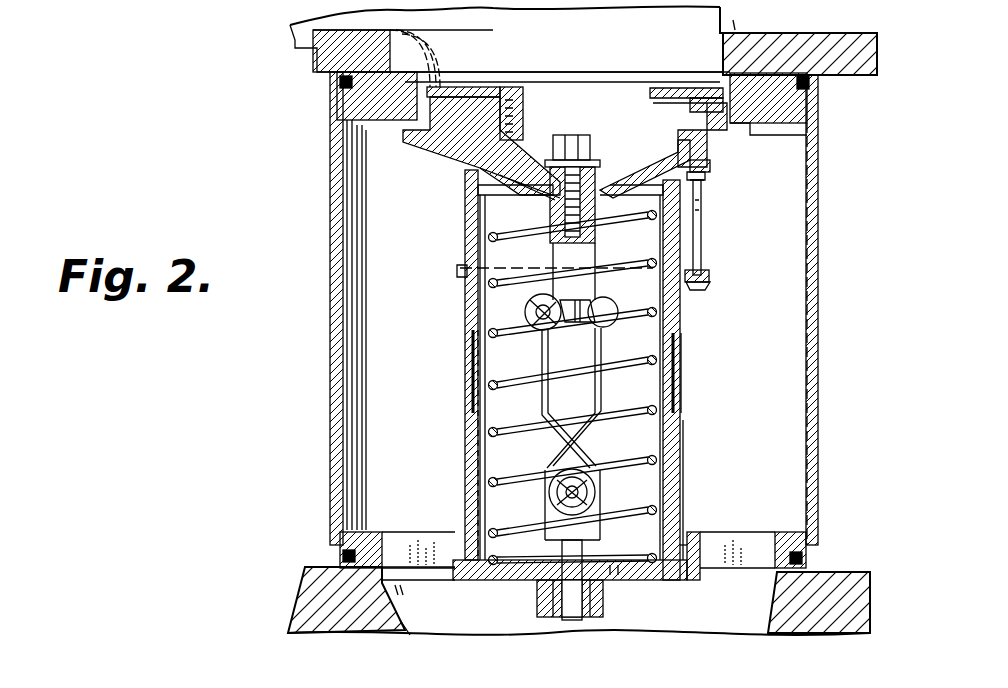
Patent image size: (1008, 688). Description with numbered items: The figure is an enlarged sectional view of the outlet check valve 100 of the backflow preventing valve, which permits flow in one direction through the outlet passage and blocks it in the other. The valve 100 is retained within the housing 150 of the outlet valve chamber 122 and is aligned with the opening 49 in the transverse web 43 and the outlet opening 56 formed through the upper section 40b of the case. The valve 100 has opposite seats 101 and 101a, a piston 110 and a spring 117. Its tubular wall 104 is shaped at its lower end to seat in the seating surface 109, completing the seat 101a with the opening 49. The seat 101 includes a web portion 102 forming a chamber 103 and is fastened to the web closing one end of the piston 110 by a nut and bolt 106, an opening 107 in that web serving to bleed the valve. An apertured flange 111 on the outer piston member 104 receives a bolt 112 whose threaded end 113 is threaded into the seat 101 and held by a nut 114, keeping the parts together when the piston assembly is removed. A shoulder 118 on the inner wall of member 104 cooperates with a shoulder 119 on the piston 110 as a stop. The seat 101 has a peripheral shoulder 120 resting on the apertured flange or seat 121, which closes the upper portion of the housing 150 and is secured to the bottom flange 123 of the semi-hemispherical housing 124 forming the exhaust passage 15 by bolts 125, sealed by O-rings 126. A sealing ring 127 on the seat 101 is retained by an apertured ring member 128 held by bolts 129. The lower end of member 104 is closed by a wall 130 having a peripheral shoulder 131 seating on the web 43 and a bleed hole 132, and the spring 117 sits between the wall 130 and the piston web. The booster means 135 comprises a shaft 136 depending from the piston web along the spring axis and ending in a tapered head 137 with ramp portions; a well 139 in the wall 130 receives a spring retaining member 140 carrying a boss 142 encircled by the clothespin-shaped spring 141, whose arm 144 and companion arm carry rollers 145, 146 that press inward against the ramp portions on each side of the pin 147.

The exhaust passage 15 is at (583, 44).
The semi-hemispherical shaped wall or housing 124 is at (735, 22).
The bottom flange 123 is at (855, 60).
The apertured ring member 128 is at (470, 88).
The bolts 129 is at (512, 98).
The O-rings 126 is at (333, 80).
The seat 101 is at (705, 105).
The apertured flange or seat 121 is at (810, 103).
The peripheral shoulder 120 is at (807, 148).
The bolts 125 is at (345, 132).
The outlet valve chamber 122 is at (355, 333).
The housing 150 is at (320, 228).
The web portion 102 is at (660, 148).
The sealing ring 127 is at (452, 120).
The chamber 103 is at (500, 113).
The threaded end 113 is at (705, 150).
The nut 114 is at (700, 175).
The bolt 112 is at (697, 235).
The apertured flange 111 is at (712, 278).
The nut and bolt 106 is at (553, 148).
The opening 107 is at (597, 172).
The tapered head 137 is at (588, 290).
The piston 110 is at (465, 215).
The tubular wall 104 is at (682, 472).
The shaft 136 is at (478, 268).
The shoulder 119 is at (678, 348).
The shoulder 118 is at (678, 395).
The booster means 135 is at (682, 438).
The spring 117 is at (490, 450).
The roller 145 is at (527, 312).
The roller 146 is at (617, 312).
The pin 147 is at (580, 345).
The clothespin-shaped spring 141 is at (656, 432).
The boss 142 is at (585, 488).
The arm 144 is at (470, 420).
The wall 130 is at (500, 580).
The cavity or well portion 139 is at (605, 610).
The spring retaining member 140 is at (585, 622).
The bleed hole 132 is at (620, 580).
The peripheral shoulder 131 is at (695, 580).
The seating surface 109 is at (690, 545).
The transverse web 43 is at (345, 542).
The opening 49 is at (412, 545).
The upper section 40b is at (300, 612).
The seat 101a is at (440, 575).
The outlet opening 56 is at (770, 615).
The outlet check valve 100 is at (455, 372).